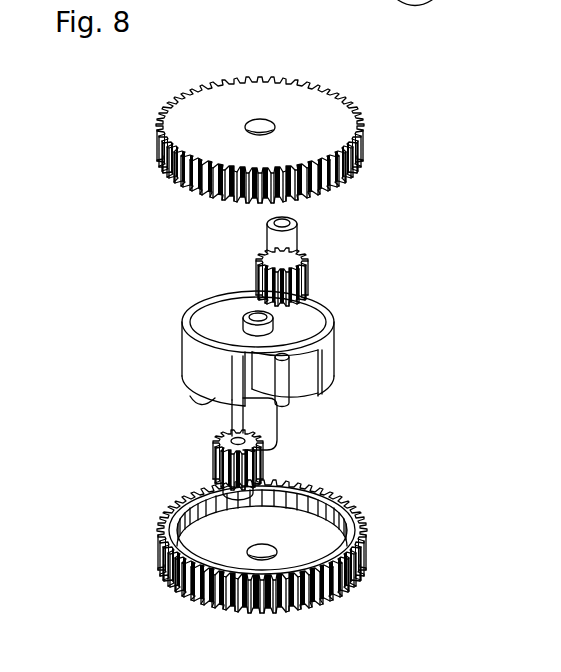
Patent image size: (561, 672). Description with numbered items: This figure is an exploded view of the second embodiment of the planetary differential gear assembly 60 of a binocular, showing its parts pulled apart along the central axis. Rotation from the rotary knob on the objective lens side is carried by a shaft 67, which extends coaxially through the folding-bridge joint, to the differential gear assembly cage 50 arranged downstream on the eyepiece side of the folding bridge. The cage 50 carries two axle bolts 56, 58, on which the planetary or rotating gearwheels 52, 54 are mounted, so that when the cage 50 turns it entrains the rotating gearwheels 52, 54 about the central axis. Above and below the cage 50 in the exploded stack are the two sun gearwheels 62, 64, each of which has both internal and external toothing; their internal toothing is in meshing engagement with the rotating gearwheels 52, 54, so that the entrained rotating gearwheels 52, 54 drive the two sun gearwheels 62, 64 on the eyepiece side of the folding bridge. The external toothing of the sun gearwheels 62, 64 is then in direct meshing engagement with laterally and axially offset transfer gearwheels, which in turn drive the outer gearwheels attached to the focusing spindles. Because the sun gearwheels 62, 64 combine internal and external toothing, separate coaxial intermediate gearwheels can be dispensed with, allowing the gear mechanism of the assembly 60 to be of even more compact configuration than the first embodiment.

The differential gear assembly cage 50 is at (338, 363).
The rotating gearwheel 52 is at (266, 458).
The rotating gearwheel 54 is at (310, 250).
The axle bolt 56 is at (230, 402).
The axle bolt 58 is at (292, 378).
The planetary differential gear assembly 60 is at (322, 370).
The sun gearwheel 62 is at (368, 148).
The sun gearwheel 64 is at (368, 551).
The shaft 67 is at (279, 432).